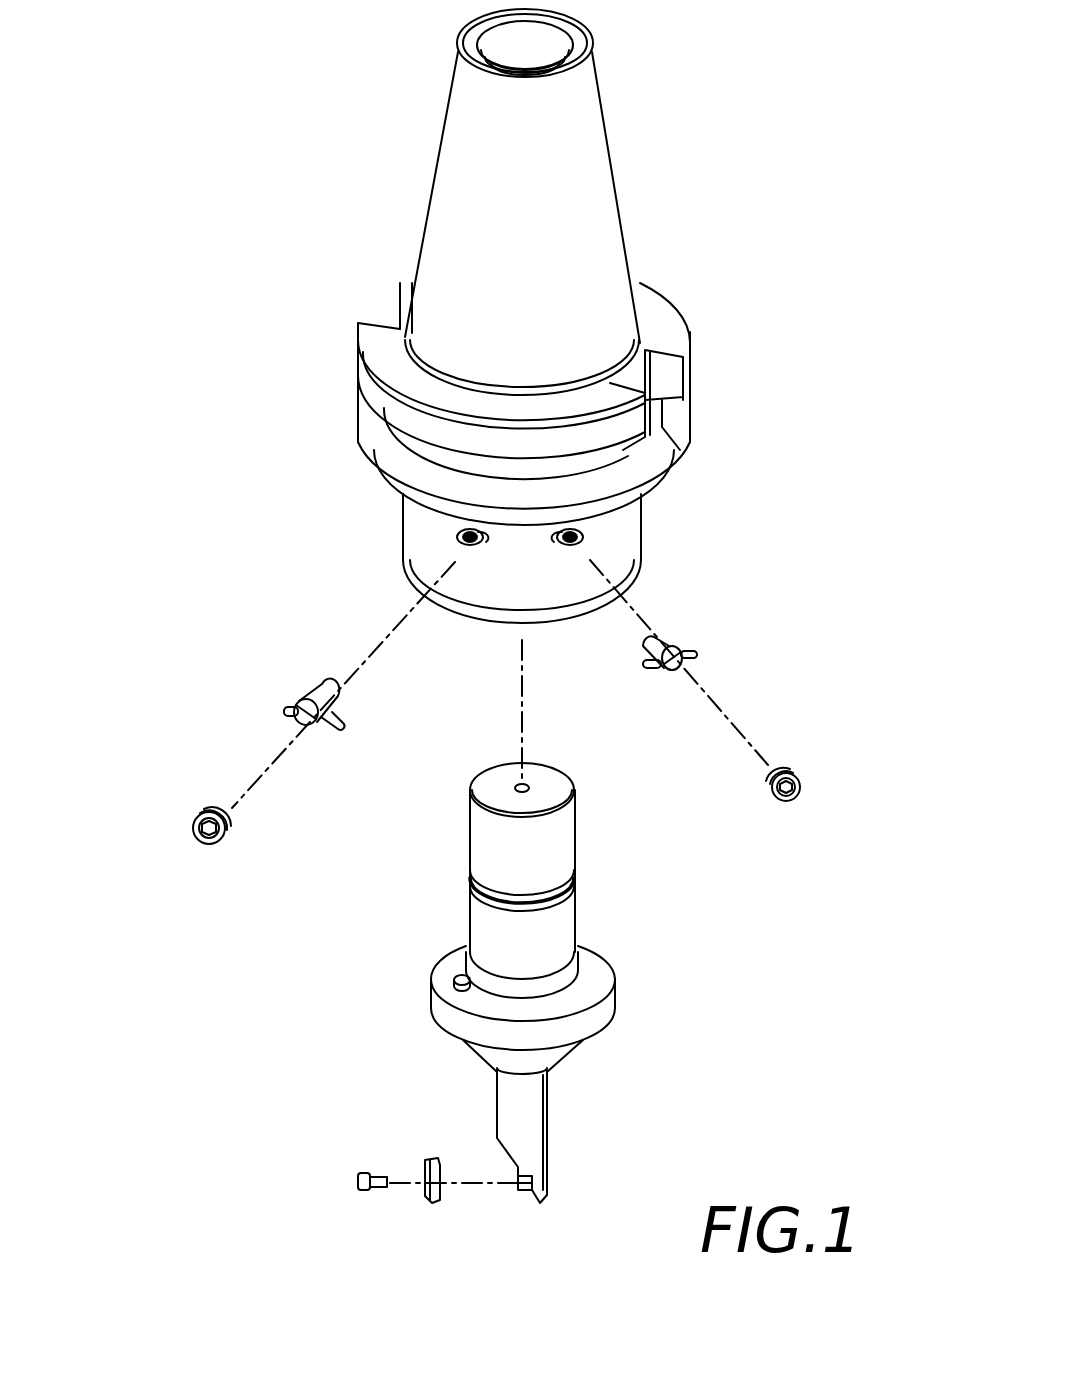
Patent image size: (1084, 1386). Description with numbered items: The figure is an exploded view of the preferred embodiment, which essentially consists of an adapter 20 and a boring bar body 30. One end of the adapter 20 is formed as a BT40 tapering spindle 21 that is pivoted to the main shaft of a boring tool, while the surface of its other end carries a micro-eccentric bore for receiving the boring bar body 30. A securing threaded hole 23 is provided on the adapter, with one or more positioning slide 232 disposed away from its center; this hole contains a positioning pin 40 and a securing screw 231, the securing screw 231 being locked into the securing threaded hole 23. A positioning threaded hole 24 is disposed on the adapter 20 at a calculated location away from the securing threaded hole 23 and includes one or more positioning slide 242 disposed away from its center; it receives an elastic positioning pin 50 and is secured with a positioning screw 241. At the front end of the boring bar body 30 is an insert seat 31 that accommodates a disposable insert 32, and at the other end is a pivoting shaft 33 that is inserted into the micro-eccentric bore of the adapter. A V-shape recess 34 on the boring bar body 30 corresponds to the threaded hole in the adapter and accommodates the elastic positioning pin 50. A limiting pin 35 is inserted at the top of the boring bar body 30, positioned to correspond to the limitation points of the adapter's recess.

The adapter 20 is at (554, 369).
The BT40 tapering spindle 21 is at (600, 158).
The securing threaded hole 23 is at (456, 546).
The positioning threaded hole 24 is at (590, 540).
The positioning slide 232 is at (492, 547).
The positioning slide 242 is at (548, 547).
The positioning pin 40 is at (283, 695).
The elastic positioning pin 50 is at (690, 643).
The securing screw 231 is at (190, 805).
The positioning screw 241 is at (805, 772).
The boring bar body 30 is at (590, 1032).
The pivoting shaft 33 is at (483, 840).
The V-shape recess 34 is at (463, 893).
The limiting pin 35 is at (450, 985).
The insert seat 31 is at (527, 1195).
The disposable insert 32 is at (432, 1200).